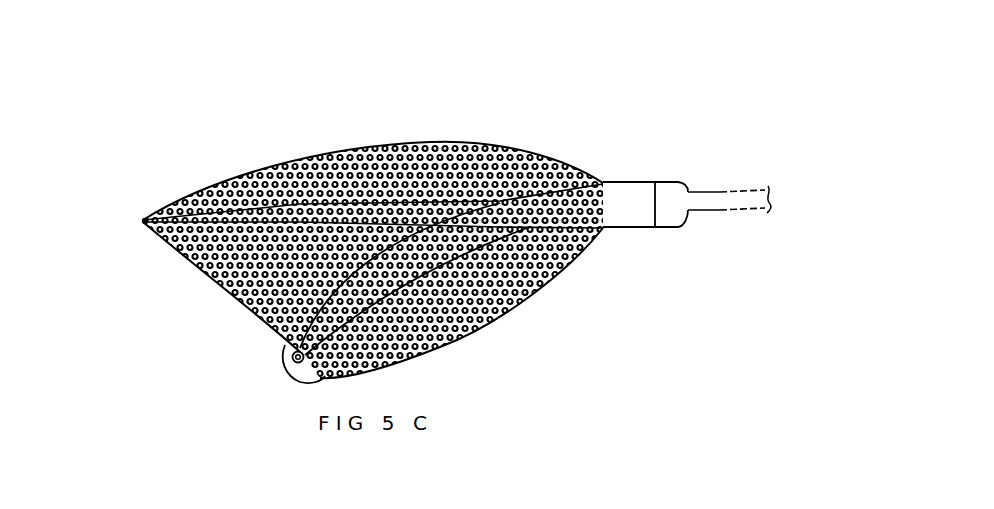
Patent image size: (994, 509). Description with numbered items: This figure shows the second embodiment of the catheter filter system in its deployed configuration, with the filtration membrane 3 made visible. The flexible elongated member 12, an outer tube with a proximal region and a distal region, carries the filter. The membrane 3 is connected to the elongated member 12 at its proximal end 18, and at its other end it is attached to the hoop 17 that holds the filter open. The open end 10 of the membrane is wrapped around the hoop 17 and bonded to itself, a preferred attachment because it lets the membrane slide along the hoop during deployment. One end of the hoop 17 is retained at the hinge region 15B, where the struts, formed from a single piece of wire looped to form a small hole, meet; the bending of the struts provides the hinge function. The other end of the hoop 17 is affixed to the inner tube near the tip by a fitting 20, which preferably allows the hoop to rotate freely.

The filtration membrane 3 is at (428, 153).
The open end of the membrane 10 is at (222, 298).
The flexible elongated member 12 is at (672, 195).
The hinge region 15B is at (285, 367).
The hoop 17 is at (185, 272).
The proximal end 18 is at (630, 193).
The fitting 20 is at (143, 220).